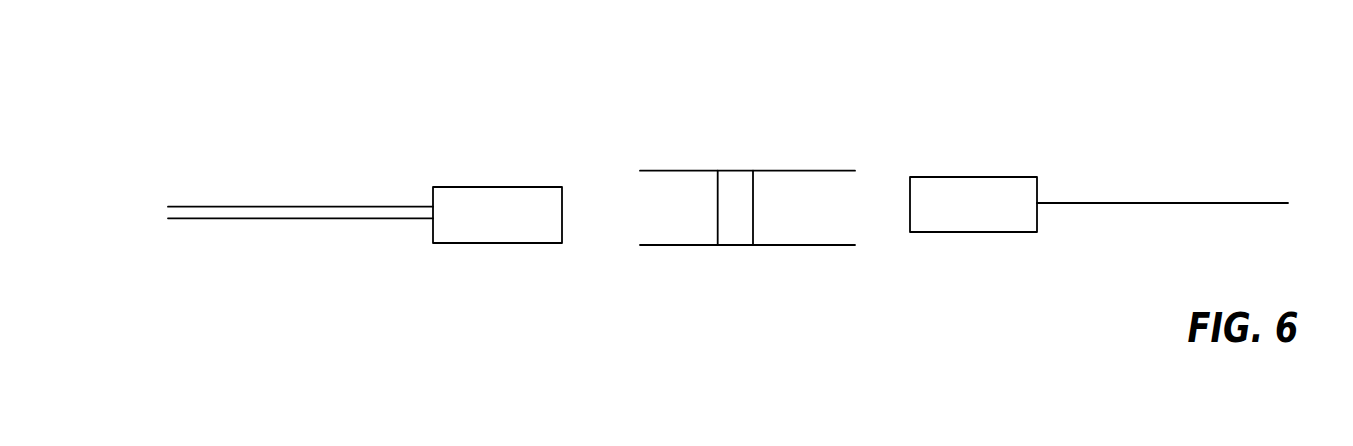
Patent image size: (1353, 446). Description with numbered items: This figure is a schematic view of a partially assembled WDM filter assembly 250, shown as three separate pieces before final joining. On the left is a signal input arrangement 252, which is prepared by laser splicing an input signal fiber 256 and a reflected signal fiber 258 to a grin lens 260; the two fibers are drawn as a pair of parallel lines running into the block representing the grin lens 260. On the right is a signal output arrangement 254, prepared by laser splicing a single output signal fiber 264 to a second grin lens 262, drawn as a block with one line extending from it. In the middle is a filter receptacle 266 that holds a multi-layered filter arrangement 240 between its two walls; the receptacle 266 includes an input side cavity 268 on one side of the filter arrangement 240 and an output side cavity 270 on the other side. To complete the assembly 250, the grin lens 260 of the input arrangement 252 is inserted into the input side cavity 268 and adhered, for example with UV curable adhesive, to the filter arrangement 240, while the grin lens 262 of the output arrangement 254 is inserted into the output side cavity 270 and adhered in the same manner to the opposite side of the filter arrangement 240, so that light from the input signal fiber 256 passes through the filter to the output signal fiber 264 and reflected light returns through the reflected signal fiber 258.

The filter assembly 250 is at (878, 100).
The signal input arrangement 252 is at (562, 168).
The signal output arrangement 254 is at (915, 168).
The input signal fiber 256 is at (318, 207).
The reflected signal fiber 258 is at (338, 218).
The grin lens 260 is at (457, 195).
The grin lens 262 is at (975, 218).
The output signal fiber 264 is at (1110, 203).
The filter receptacle 266 is at (808, 170).
The input side cavity 268 is at (687, 210).
The output side cavity 270 is at (807, 217).
The multi-layered filter arrangement 240 is at (714, 167).